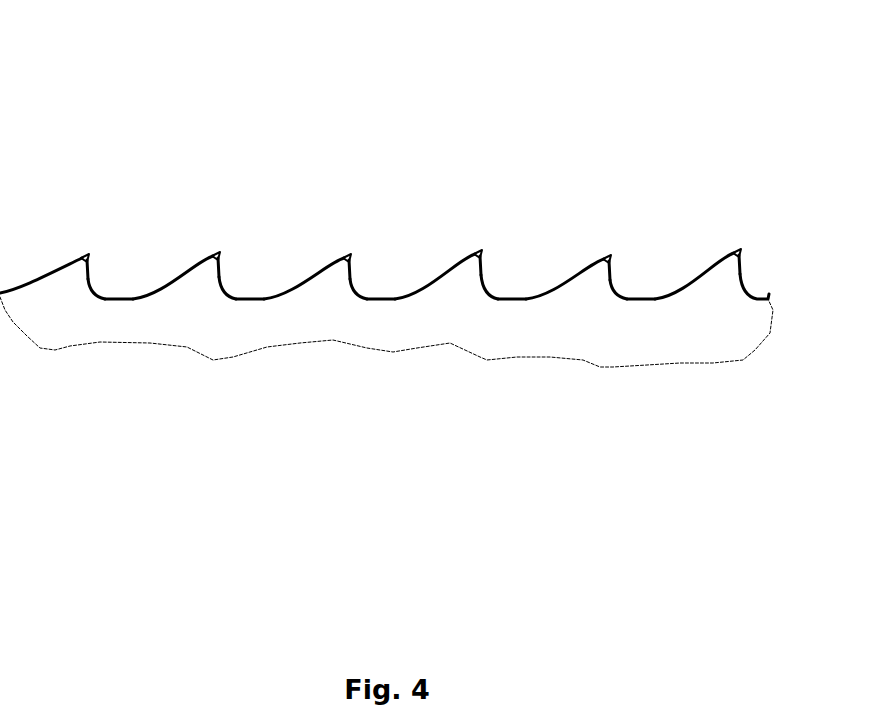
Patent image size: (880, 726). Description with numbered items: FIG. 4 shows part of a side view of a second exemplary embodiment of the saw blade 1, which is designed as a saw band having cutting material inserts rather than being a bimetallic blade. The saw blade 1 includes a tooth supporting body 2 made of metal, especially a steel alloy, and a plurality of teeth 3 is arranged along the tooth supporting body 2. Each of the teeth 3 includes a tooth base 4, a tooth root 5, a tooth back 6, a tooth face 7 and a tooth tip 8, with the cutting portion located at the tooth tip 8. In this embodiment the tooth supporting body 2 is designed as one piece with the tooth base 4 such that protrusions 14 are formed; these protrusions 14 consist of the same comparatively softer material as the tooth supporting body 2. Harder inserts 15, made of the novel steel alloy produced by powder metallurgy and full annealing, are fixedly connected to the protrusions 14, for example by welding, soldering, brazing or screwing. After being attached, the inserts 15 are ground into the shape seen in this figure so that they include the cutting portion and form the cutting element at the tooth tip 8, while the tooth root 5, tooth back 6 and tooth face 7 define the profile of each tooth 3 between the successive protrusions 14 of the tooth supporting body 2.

The saw blade 1 is at (302, 173).
The tooth supporting body 2 is at (88, 313).
The teeth 3 is at (67, 287).
The tooth base 4 is at (357, 277).
The tooth root 5 is at (235, 295).
The tooth back 6 is at (43, 276).
The tooth face 7 is at (743, 265).
The tooth tip 8 is at (85, 256).
The protrusions 14 is at (175, 287).
The inserts 15 is at (216, 254).